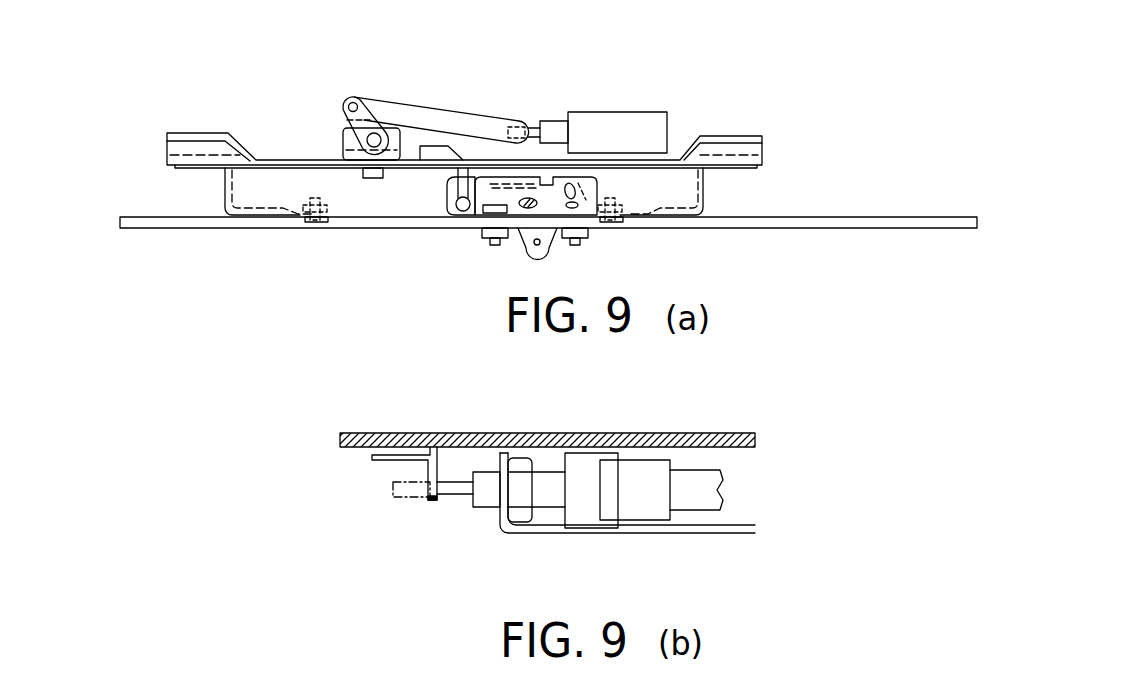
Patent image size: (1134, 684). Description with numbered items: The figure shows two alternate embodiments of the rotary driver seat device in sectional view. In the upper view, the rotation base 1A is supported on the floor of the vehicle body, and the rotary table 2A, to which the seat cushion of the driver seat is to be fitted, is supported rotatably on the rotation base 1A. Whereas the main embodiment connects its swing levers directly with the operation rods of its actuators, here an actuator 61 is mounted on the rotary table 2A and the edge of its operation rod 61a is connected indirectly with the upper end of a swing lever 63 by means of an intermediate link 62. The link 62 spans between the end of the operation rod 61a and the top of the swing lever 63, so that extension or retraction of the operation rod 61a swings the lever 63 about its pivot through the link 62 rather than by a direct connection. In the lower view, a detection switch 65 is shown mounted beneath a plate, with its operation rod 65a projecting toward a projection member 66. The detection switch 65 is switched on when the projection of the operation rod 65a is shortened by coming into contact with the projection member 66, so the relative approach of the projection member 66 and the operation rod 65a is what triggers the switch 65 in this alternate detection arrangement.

The rotation base 1A is at (777, 228).
The rotary table 2A is at (728, 136).
The actuator 61 is at (624, 112).
The operation rod 61a is at (537, 122).
The intermediate link 62 is at (453, 115).
The swing lever 63 is at (345, 127).
The detection switch 65 is at (583, 527).
The operation rod 65a is at (457, 497).
The projection member 66 is at (418, 466).